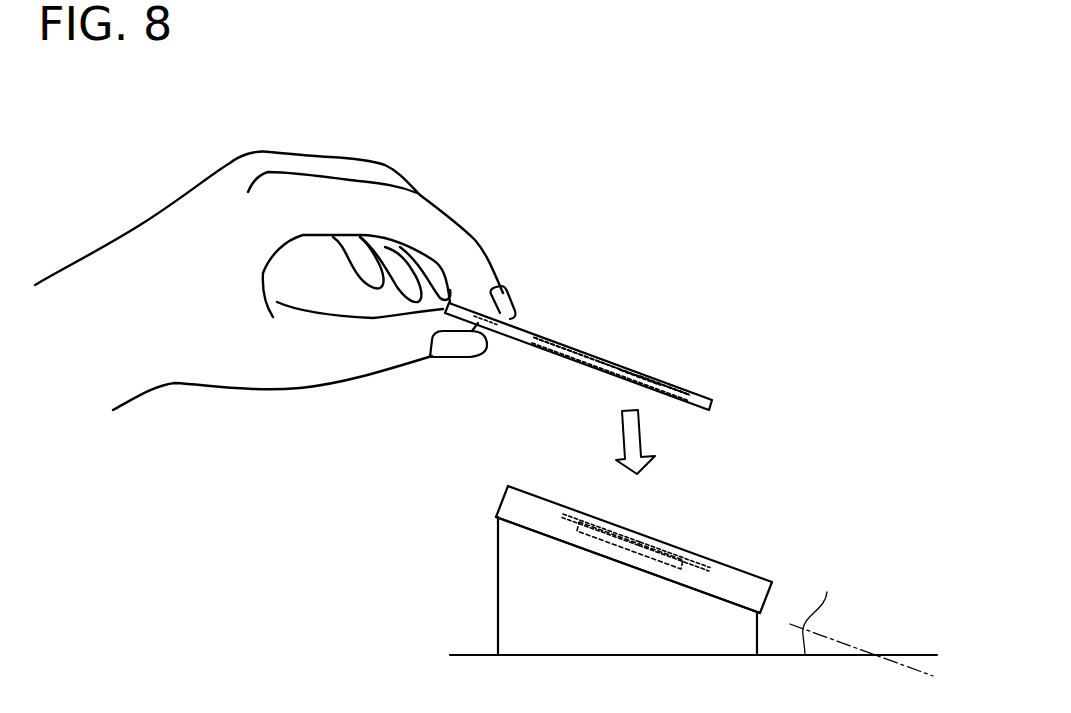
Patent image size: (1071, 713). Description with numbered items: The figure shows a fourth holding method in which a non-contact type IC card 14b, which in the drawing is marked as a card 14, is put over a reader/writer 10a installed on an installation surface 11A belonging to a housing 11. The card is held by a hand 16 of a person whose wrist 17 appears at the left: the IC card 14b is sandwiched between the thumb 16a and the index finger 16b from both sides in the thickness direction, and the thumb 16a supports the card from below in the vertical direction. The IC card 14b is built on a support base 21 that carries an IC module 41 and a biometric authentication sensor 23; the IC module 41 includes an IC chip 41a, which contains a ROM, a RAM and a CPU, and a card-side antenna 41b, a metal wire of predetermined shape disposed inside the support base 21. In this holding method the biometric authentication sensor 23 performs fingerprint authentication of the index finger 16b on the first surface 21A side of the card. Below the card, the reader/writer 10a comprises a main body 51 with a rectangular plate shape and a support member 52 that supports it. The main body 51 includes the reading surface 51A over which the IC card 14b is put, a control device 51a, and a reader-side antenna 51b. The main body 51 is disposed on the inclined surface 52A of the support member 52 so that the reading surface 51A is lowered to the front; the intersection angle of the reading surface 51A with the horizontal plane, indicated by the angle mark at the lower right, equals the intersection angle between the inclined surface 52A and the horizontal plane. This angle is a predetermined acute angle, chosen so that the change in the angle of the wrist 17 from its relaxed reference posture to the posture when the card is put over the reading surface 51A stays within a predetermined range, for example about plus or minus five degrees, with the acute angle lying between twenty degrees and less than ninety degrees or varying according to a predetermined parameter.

The wrist 17 is at (242, 281).
The finger 16 is at (475, 188).
The thumb 16a is at (476, 380).
The index finger 16b is at (532, 233).
The flexible printed circuit 14 is at (641, 350).
The non-contact type IC card 14b is at (641, 350).
The IC module 41 is at (611, 274).
The IC chip 41a is at (645, 298).
The antenna 41b is at (575, 282).
The biometric authentication sensor 23 is at (523, 286).
The support base 21 is at (697, 319).
The first surface 21A is at (668, 318).
The reader/writer 10a is at (714, 539).
The main body 51 is at (634, 507).
The reading surface 51A is at (624, 495).
The control device 51a is at (627, 501).
The antenna 51b is at (692, 517).
The support member 52 is at (649, 571).
The inclined surface 52A is at (644, 523).
The housing 11 is at (651, 605).
The installation surface 11A is at (651, 605).